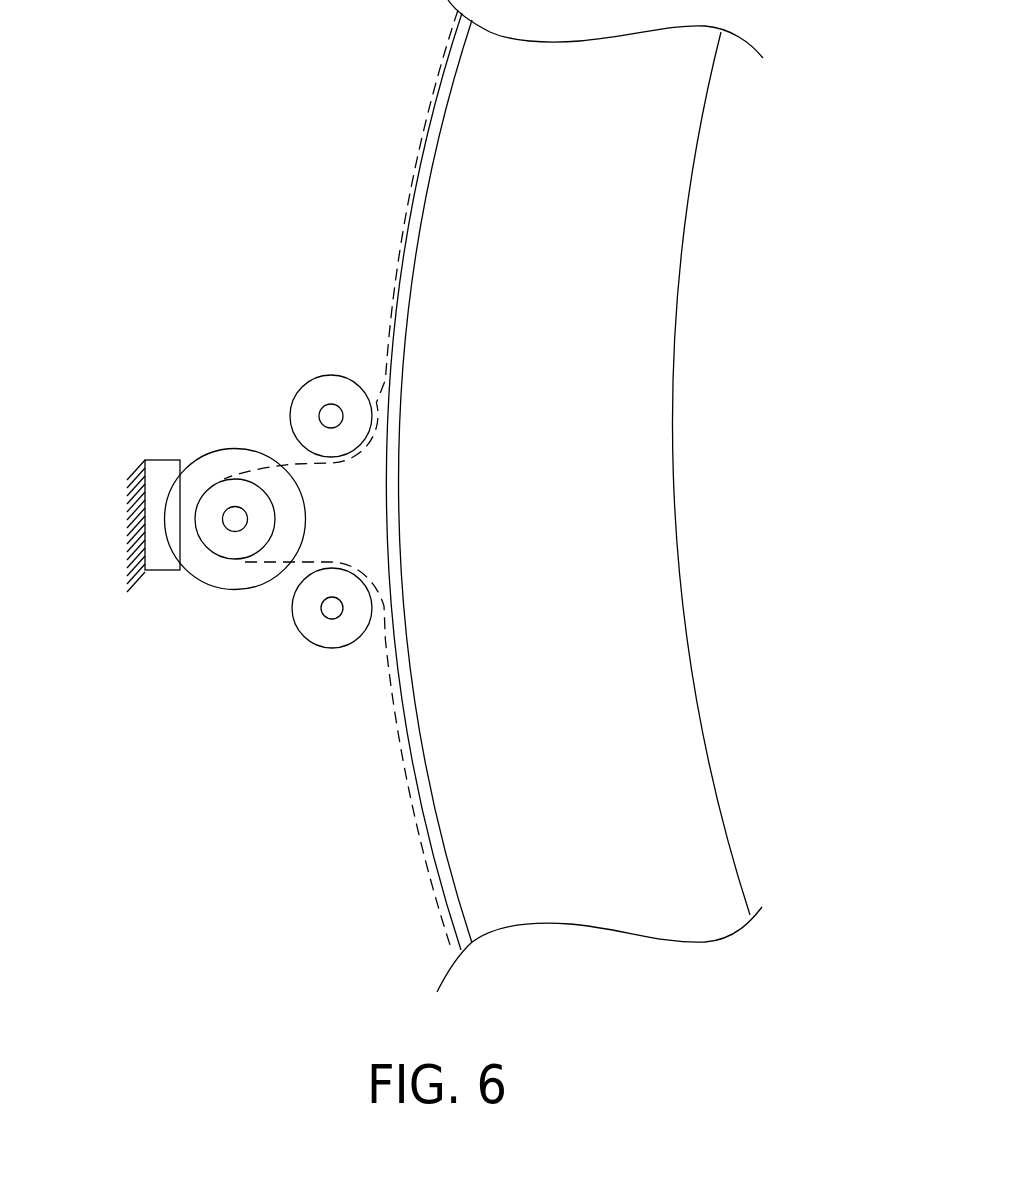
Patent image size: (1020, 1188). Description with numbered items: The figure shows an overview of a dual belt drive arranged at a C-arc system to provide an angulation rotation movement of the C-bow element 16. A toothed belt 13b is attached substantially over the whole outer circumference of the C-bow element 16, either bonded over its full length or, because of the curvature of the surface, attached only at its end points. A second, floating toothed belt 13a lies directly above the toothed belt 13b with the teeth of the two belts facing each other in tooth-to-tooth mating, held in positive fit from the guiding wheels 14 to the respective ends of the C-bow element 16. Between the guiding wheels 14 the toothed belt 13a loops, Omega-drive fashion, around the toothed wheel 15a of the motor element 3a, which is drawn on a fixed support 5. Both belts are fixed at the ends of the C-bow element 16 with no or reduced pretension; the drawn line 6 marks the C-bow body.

The C-bow 6 is at (640, 730).
The C-bow element 16 is at (622, 390).
The second toothed belt 13a is at (418, 828).
The toothed belt 13b is at (426, 167).
The guiding wheels 14 is at (331, 386).
The motor element 3a is at (220, 449).
The toothed wheel 15a is at (237, 543).
The support / bearing block 5 is at (160, 483).